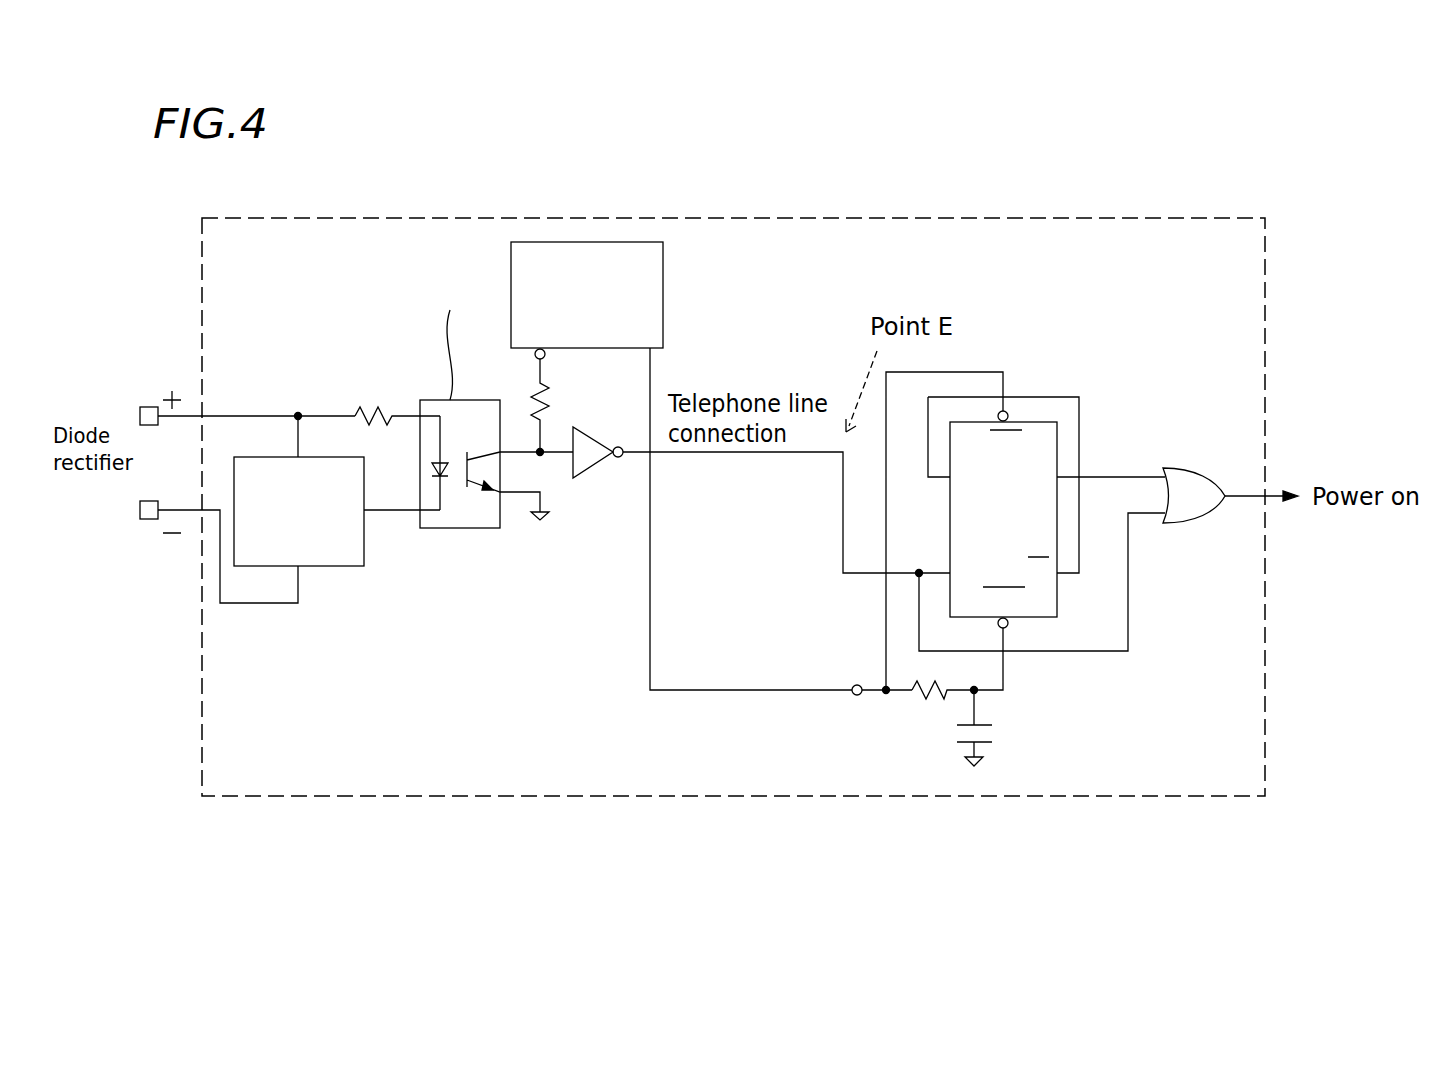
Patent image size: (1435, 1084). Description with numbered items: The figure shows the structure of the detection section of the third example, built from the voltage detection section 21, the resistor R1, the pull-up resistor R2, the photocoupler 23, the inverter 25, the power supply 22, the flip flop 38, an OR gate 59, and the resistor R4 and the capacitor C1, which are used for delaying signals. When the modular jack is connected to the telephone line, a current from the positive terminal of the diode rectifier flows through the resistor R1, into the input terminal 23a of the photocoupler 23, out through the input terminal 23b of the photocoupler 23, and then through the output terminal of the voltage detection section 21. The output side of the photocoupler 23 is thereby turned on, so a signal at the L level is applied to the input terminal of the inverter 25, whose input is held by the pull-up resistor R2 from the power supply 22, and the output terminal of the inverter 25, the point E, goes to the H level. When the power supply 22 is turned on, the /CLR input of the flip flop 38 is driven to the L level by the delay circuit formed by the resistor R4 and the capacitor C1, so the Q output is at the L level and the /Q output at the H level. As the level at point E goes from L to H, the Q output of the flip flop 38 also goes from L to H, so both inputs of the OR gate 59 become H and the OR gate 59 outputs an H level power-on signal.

The voltage detection section 21 is at (245, 457).
The power supply 22 is at (628, 242).
The photocoupler 23 is at (450, 450).
The input terminal of the photocoupler 23a is at (420, 417).
The input terminal of the photocoupler 23b is at (412, 516).
The inverter 25 is at (590, 467).
The flip flop 38 is at (1040, 422).
The OR gate 59 is at (1190, 468).
The resistor R1 is at (397, 395).
The pull-up resistor R2 is at (524, 400).
The resistor R4 is at (955, 683).
The capacitor C1 is at (991, 728).